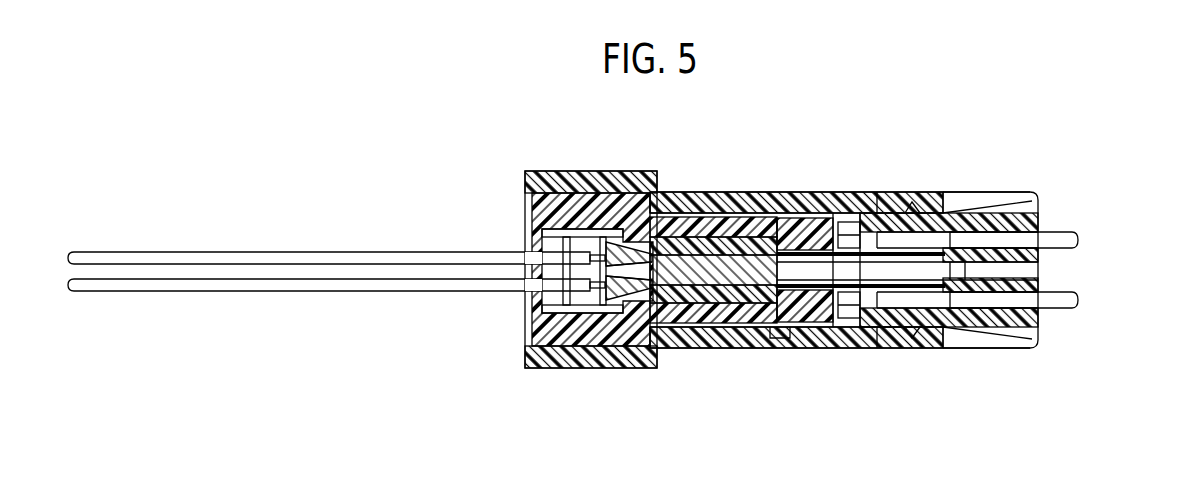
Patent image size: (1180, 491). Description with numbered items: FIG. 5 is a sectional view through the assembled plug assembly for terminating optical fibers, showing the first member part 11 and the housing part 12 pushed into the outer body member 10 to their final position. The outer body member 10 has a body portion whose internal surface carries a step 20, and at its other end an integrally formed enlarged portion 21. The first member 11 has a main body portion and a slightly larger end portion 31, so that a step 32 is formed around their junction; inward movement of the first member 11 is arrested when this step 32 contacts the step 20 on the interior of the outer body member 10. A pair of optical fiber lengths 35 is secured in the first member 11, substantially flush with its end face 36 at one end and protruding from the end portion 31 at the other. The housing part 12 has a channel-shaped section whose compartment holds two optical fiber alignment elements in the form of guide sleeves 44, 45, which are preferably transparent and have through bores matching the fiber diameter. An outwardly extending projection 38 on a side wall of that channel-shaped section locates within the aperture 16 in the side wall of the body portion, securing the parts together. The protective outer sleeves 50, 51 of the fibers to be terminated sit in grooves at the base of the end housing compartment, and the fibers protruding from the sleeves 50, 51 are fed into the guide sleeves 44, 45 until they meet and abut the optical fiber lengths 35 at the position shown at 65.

The outer body member 10 is at (828, 291).
The first member part 11 is at (818, 348).
The housing part 12 is at (676, 227).
The aperture 16 is at (793, 201).
The step 20 is at (907, 207).
The enlarged portion 21 is at (570, 171).
The end portion 31 is at (882, 340).
The step 32 is at (907, 324).
The optical fiber lengths 35 is at (997, 240).
The end face 36 is at (1040, 284).
The projection 38 is at (775, 346).
The guide sleeve 44 is at (725, 244).
The guide sleeve 45 is at (628, 350).
The protective outer sleeve 50 is at (300, 292).
The protective outer sleeve 51 is at (300, 251).
The abutment position 65 is at (757, 262).